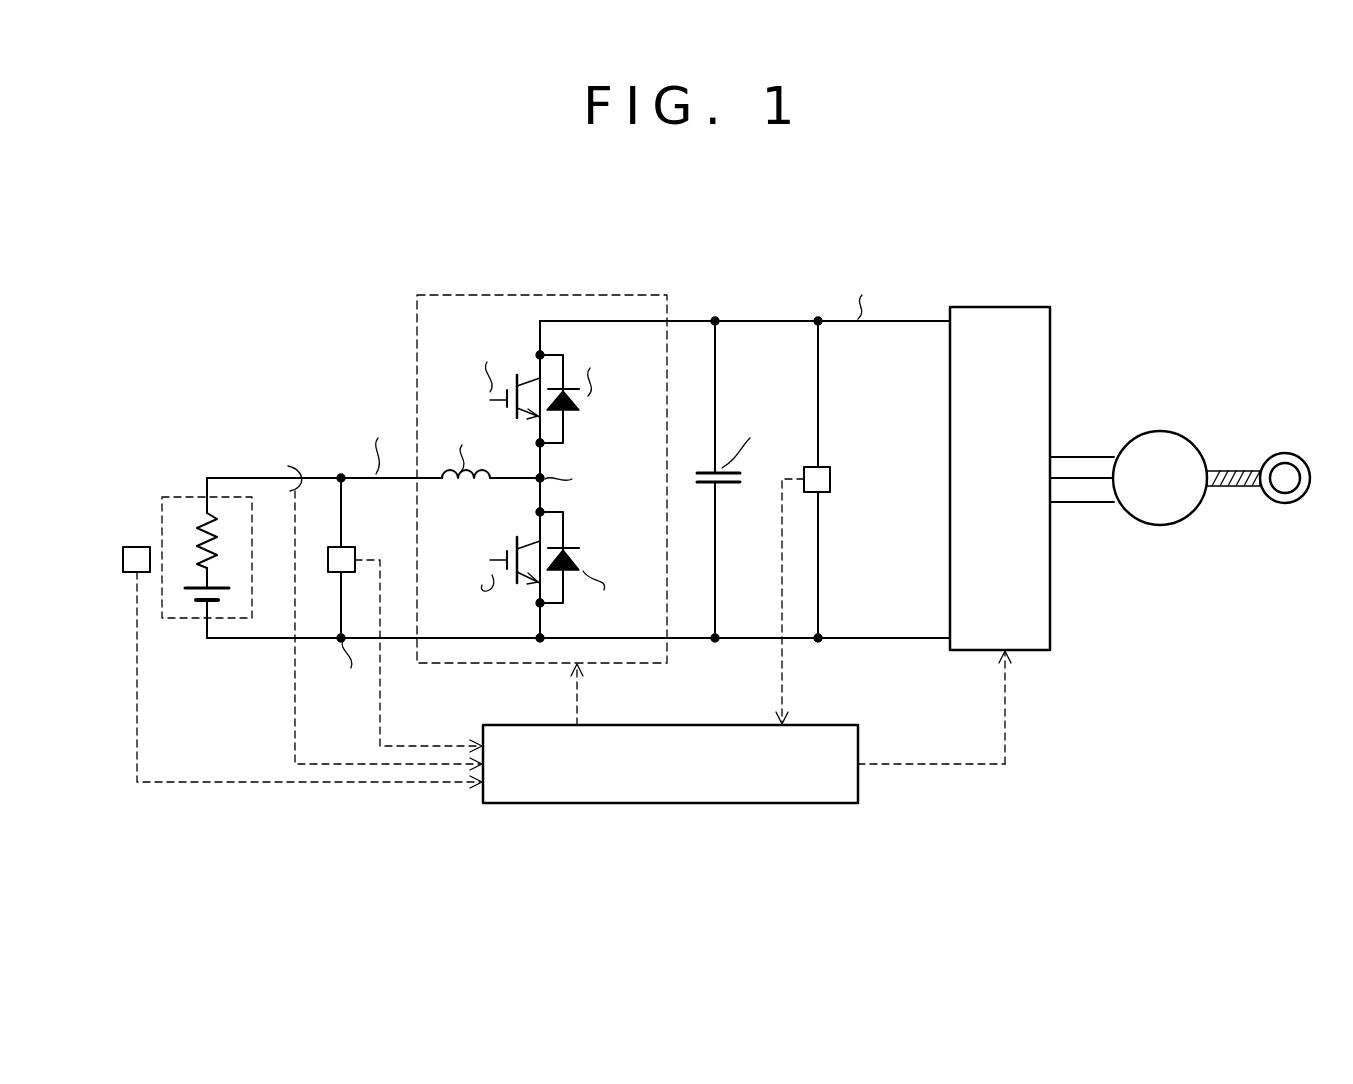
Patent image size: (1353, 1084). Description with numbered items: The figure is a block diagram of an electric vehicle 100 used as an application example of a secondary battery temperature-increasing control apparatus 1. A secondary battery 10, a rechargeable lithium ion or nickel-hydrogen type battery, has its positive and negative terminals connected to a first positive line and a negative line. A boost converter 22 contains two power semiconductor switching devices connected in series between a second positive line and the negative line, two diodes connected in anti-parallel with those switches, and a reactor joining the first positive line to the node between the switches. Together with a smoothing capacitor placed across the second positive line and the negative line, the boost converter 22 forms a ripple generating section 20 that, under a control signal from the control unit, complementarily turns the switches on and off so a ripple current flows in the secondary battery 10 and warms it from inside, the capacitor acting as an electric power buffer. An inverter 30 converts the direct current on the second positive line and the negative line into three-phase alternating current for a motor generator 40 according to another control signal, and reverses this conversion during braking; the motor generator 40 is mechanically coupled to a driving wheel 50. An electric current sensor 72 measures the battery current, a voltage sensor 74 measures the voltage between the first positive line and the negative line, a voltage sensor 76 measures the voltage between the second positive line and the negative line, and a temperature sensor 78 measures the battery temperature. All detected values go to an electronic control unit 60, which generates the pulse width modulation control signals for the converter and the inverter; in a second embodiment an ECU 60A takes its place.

The secondary battery temperature-increasing control apparatus 1 is at (338, 814).
The electric vehicle 100 is at (296, 248).
The secondary battery 10 is at (184, 496).
The ripple generating section 20 is at (740, 280).
The boost converter 22 is at (628, 664).
The inverter 30 is at (1000, 306).
The motor generator 40 is at (1158, 431).
The driving wheel 50 is at (1284, 453).
The electronic control unit 60 is at (744, 786).
The ECU 60A is at (770, 805).
The electric current sensor 72 is at (292, 466).
The voltage sensor 74 is at (347, 546).
The voltage sensor 76 is at (826, 465).
The temperature sensor 78 is at (136, 546).